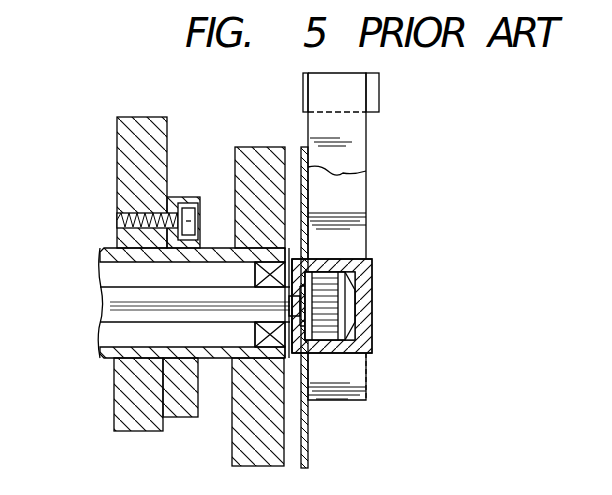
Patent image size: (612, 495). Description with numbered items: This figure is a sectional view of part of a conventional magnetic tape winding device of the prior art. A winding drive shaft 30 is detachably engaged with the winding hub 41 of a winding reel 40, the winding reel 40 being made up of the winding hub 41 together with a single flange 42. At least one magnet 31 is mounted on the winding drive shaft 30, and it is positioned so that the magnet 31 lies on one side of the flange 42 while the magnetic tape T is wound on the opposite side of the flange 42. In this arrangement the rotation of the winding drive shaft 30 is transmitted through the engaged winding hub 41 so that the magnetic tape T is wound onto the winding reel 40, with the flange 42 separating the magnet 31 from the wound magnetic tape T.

The winding drive shaft 30 is at (100, 300).
The magnet 31 is at (258, 148).
The winding reel 40 is at (365, 324).
The winding hub 41 is at (365, 291).
The flange 42 is at (305, 438).
The magnetic tape T is at (362, 150).